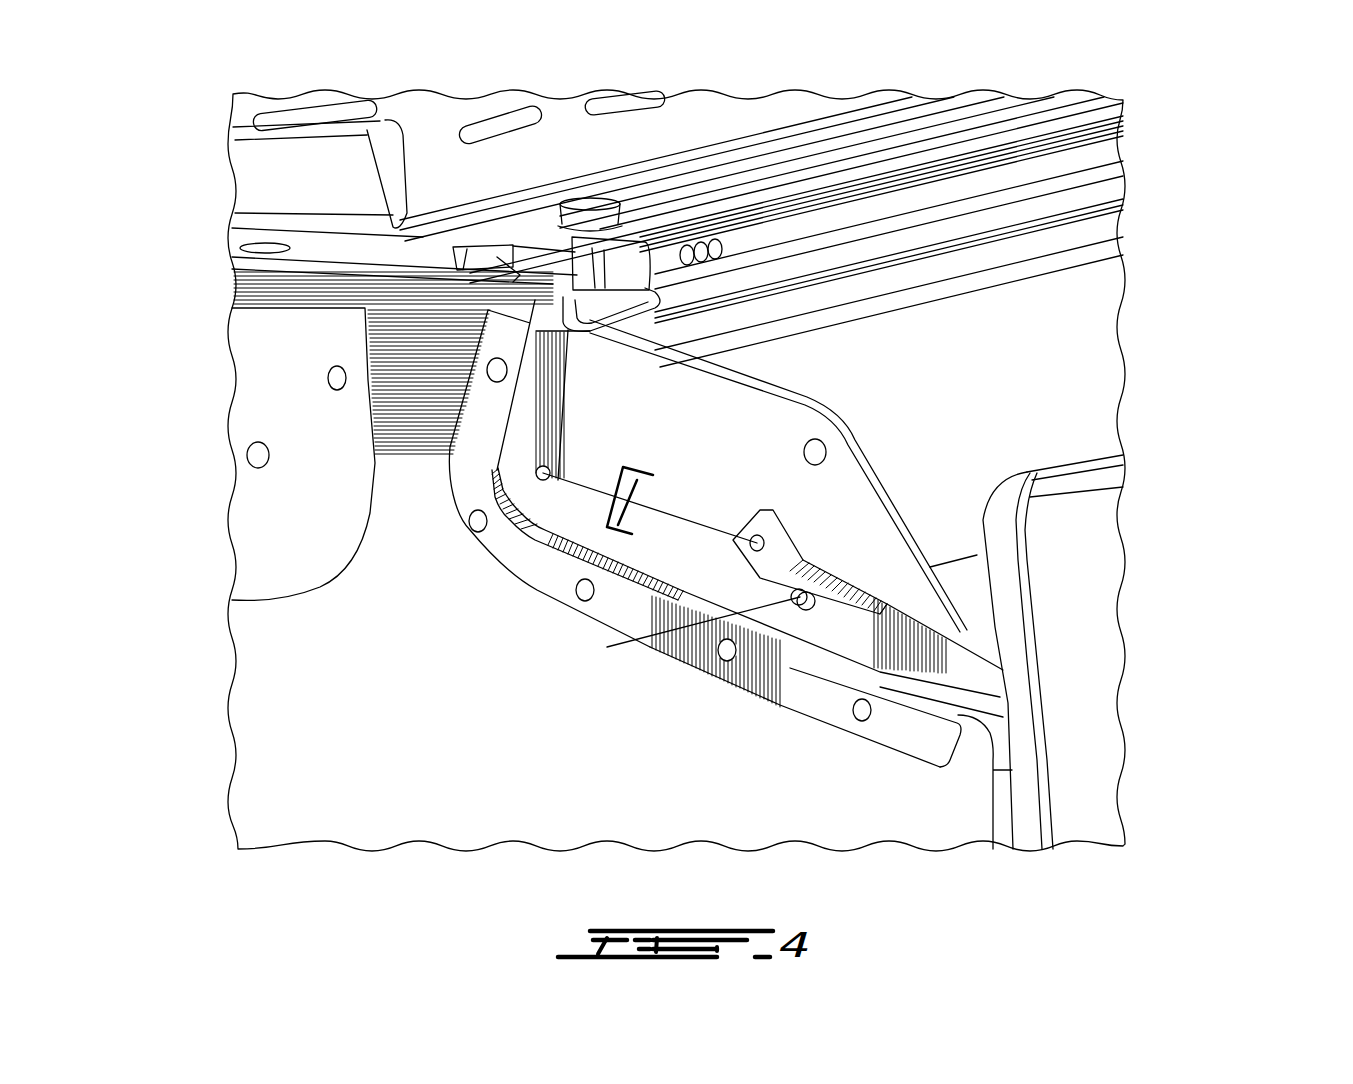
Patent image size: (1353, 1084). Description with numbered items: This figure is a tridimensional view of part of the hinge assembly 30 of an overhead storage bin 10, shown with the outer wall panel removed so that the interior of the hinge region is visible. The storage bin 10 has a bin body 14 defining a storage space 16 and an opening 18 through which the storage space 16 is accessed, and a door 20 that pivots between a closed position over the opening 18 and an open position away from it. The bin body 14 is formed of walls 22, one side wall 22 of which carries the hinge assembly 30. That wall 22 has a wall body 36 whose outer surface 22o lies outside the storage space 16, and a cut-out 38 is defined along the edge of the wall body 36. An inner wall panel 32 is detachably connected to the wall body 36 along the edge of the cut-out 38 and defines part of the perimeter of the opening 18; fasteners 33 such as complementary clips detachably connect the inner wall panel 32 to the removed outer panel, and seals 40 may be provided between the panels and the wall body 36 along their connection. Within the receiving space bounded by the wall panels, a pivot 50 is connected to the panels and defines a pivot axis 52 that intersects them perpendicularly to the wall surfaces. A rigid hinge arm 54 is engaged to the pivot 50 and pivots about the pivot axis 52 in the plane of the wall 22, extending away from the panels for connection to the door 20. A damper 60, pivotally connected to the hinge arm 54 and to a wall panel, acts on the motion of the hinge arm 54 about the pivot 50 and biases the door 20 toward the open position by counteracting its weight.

The storage bin 10 is at (1145, 133).
The bin body 14 is at (260, 708).
The storage space 16 is at (1047, 304).
The opening 18 is at (796, 241).
The door 20 is at (1078, 730).
The wall 22 is at (336, 742).
The outer surface 22o is at (450, 752).
The hinge assembly 30 is at (432, 376).
The inner wall panel 32 is at (708, 387).
The fasteners 33 is at (812, 445).
The wall body 36 is at (554, 757).
The cut-out 38 is at (486, 492).
The seals 40 is at (913, 745).
The pivot 50 is at (803, 603).
The pivot axis 52 is at (627, 645).
The hinge arm 54 is at (958, 658).
The damper 60 is at (675, 520).